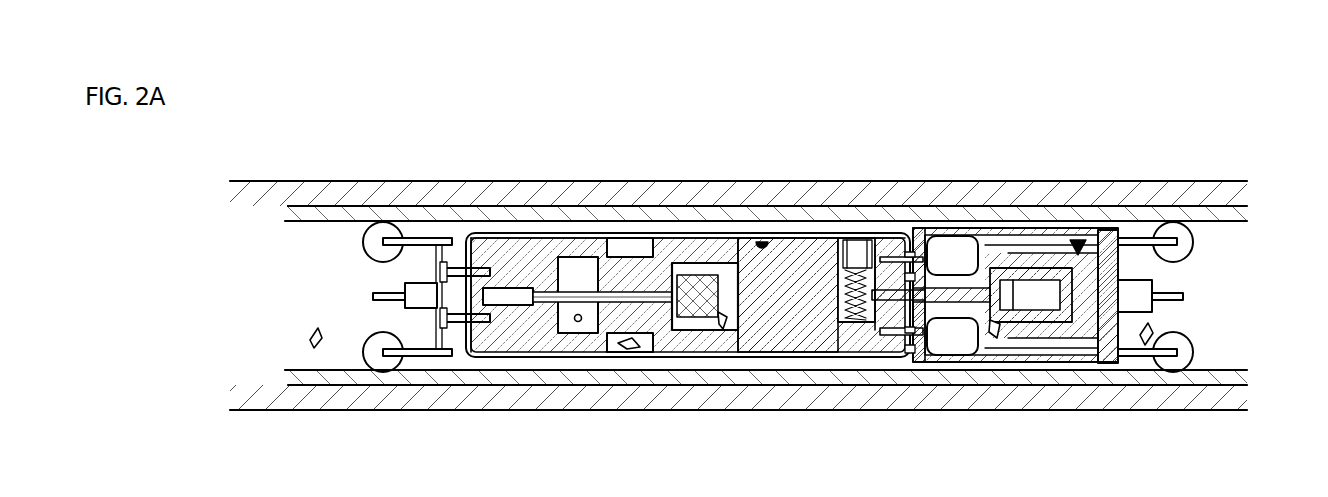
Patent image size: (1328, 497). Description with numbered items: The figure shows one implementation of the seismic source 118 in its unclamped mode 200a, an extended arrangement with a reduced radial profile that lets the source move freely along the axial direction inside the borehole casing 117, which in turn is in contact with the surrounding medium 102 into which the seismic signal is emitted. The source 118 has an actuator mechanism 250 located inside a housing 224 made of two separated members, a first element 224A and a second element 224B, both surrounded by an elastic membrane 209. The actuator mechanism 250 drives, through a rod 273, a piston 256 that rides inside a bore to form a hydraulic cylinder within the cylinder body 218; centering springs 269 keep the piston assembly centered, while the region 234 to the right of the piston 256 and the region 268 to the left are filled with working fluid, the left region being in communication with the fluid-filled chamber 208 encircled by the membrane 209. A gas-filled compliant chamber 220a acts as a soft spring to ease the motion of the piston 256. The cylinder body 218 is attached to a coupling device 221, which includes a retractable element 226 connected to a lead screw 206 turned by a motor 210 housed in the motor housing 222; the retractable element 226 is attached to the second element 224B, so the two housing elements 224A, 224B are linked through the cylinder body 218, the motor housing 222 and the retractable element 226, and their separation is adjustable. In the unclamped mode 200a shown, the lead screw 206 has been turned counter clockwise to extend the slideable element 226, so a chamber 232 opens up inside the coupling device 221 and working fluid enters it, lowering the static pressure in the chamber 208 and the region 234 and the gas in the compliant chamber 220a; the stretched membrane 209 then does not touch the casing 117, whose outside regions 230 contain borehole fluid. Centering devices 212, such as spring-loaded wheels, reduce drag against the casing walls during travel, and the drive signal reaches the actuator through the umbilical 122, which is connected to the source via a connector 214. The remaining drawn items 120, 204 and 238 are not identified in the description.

The surrounding medium 102 is at (1185, 192).
The borehole casing 117 is at (321, 214).
The source 118 is at (882, 96).
The cable 120 is at (375, 297).
The umbilical 122 is at (1183, 297).
The unclamped mode 200a is at (1302, 334).
The shaft 204 is at (518, 295).
The lead screw 206 is at (585, 293).
The fluid-filled chamber 208 is at (647, 243).
The elastic membrane 209 is at (668, 240).
The motor 210 is at (703, 290).
The centering devices 212 is at (363, 241).
The connector 214 is at (403, 288).
The cylinder body 218 is at (787, 330).
The gas-filled compliant chamber 220a is at (955, 348).
The coupling device 221 is at (499, 250).
The motor housing 222 is at (688, 340).
The housing 224 is at (528, 52).
The first element of the housing 224A is at (1078, 245).
The second element of the housing 224B is at (460, 343).
The retractable element 226 is at (505, 325).
The regions outside the source 230 is at (315, 348).
The chamber 232 is at (578, 322).
The region 234 is at (995, 338).
The port 238 is at (724, 330).
The actuator mechanism 250 is at (1055, 262).
The piston 256 is at (873, 258).
The region 268 is at (862, 320).
The centering springs 269 is at (855, 245).
The rod 273 is at (988, 262).